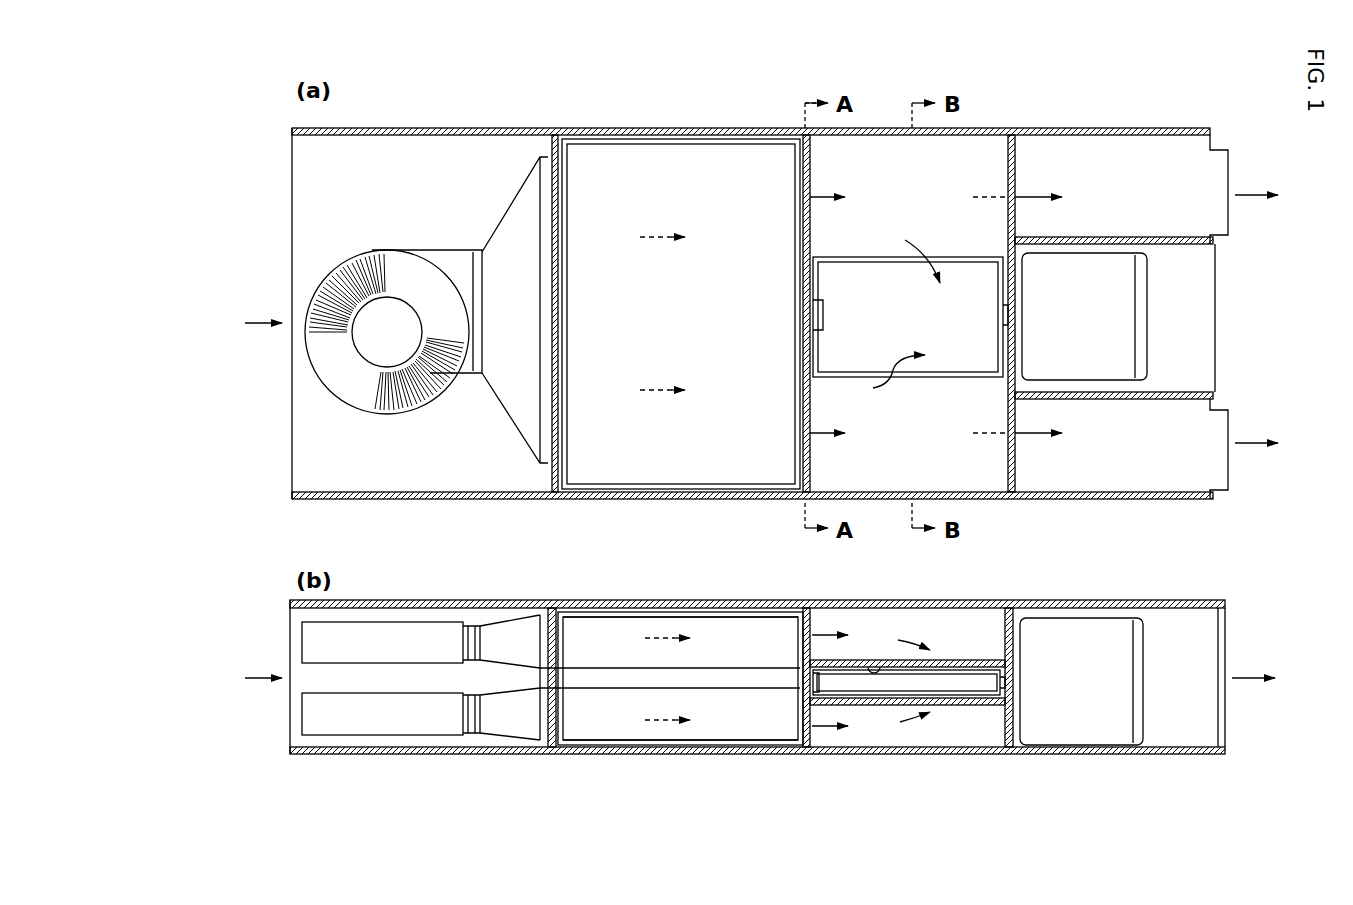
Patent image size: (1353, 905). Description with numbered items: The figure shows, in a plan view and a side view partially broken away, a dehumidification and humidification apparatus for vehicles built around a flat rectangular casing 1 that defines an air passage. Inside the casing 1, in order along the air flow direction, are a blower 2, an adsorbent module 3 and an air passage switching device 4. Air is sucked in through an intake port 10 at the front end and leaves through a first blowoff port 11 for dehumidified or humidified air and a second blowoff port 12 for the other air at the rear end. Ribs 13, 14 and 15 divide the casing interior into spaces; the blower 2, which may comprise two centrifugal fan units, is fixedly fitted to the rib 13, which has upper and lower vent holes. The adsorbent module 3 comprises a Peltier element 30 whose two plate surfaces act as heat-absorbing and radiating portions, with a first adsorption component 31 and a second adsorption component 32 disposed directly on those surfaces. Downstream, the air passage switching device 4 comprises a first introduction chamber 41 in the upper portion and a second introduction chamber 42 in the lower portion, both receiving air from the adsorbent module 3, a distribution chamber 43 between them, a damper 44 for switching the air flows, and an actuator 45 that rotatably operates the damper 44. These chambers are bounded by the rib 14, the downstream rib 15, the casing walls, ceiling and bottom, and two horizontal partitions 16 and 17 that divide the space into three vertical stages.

The casing 1 is at (513, 128).
The blower 2 is at (378, 250).
The adsorbent module 3 is at (690, 160).
The air passage switching device 4 is at (970, 165).
The intake port 10 is at (292, 230).
The first blowoff port 11 is at (1228, 178).
The second blowoff port 12 is at (1228, 462).
The rib 13 is at (555, 150).
The rib 14 is at (805, 145).
The rib 15 is at (1015, 148).
The partition 16 is at (862, 660).
The partition 17 is at (865, 705).
The Peltier element 30 is at (630, 688).
The first adsorption component 31 is at (622, 630).
The second adsorption component 32 is at (590, 728).
The first introduction chamber 41 is at (980, 642).
The second introduction chamber 42 is at (980, 744).
The distribution chamber 43 is at (882, 660).
The damper 44 is at (878, 270).
The actuator 45 is at (1092, 265).